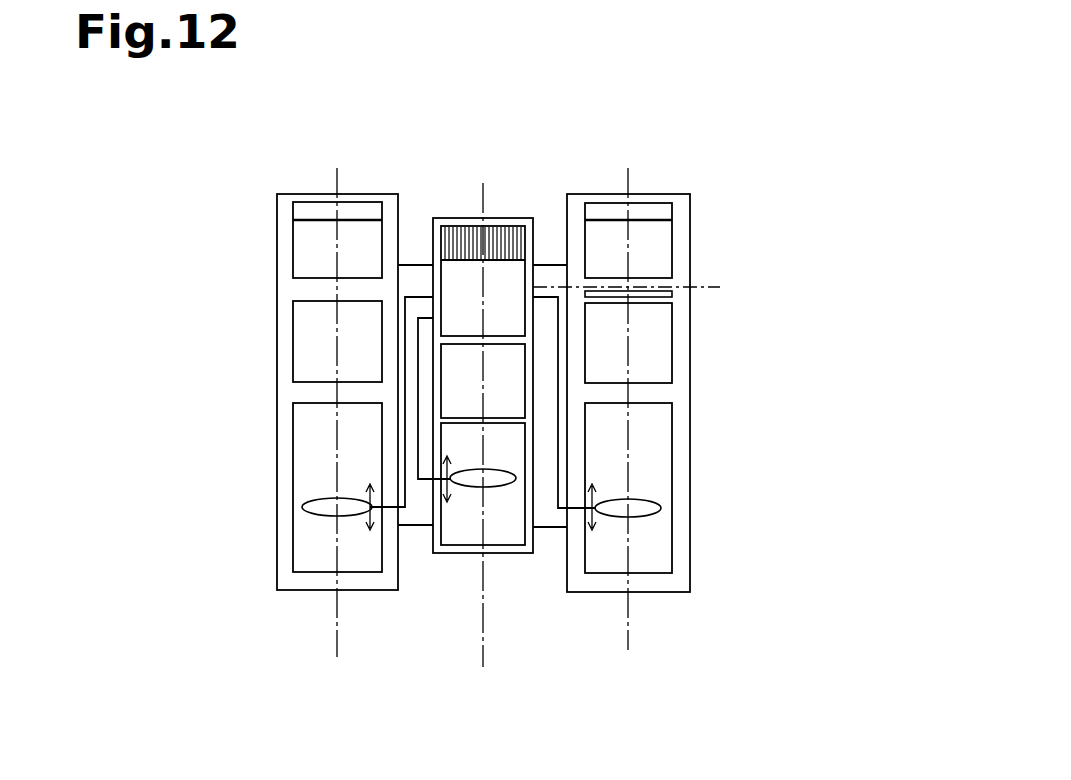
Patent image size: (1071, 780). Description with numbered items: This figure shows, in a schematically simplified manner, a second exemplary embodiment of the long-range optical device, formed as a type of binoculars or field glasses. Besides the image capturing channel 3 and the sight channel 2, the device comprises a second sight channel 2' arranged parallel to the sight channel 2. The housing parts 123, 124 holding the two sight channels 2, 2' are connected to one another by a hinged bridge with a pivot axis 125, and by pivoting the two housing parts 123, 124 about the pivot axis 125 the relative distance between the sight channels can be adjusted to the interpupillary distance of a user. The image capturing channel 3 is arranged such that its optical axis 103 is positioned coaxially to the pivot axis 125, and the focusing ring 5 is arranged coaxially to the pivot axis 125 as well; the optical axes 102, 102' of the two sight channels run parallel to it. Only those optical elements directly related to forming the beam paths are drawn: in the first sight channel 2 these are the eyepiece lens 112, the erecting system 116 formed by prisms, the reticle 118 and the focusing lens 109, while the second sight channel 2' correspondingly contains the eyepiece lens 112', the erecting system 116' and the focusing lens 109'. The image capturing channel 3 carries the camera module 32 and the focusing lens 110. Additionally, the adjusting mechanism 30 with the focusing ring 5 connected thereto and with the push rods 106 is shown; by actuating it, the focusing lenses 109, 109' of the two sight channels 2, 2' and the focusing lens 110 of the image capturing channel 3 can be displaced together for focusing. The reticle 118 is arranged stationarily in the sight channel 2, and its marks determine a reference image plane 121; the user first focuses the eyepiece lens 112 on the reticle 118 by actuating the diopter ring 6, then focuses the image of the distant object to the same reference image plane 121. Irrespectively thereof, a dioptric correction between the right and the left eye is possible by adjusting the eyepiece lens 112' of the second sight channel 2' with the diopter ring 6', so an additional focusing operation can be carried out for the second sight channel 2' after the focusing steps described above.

The sight channel 2 is at (708, 431).
The second sight channel 2' is at (252, 428).
The image capturing channel 3 is at (462, 577).
The focusing ring 5 is at (508, 225).
The diopter ring 6 is at (700, 198).
The diopter ring 6' is at (266, 194).
The adjusting mechanism 30 is at (503, 300).
The camera module 32 is at (505, 393).
The optical axis 102 is at (694, 411).
The optical axis 102' is at (253, 410).
The optical axis 103 is at (455, 371).
The pivot axis 125 is at (481, 192).
The push rod 106 is at (411, 455).
The focusing lens 109 is at (710, 493).
The focusing lens 109' is at (257, 489).
The focusing lens 110 is at (500, 473).
The eyepiece lens 112 is at (715, 240).
The eyepiece lens 112' is at (245, 240).
The erecting system 116 is at (711, 343).
The erecting system 116' is at (256, 341).
The reticle 118 is at (672, 296).
The reference image plane 121 is at (712, 287).
The housing part 123 is at (275, 537).
The housing part 124 is at (688, 540).